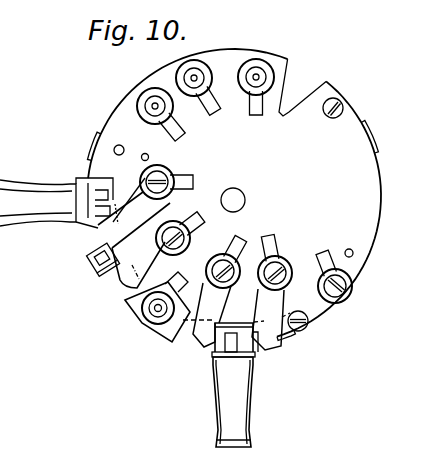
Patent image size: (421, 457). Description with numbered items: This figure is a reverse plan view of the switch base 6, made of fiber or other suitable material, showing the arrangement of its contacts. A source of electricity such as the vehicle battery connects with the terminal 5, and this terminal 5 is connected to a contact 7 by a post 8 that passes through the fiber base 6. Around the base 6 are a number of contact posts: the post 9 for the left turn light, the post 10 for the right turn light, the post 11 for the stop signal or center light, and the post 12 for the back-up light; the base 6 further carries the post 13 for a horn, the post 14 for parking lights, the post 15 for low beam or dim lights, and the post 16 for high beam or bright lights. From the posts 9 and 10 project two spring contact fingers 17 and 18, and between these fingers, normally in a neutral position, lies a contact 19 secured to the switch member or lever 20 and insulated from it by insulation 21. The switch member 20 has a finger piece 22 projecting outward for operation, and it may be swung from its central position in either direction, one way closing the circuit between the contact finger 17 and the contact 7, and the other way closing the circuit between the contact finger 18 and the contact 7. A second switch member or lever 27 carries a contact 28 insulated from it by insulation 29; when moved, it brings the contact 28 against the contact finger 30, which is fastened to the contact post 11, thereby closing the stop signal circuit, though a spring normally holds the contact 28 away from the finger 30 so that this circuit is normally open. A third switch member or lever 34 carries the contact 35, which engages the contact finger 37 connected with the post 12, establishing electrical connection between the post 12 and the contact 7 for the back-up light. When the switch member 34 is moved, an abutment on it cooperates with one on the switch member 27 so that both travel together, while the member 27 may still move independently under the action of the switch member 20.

The terminal 5 is at (140, 290).
The switch base 6 is at (344, 203).
The contact 7 is at (192, 330).
The post 8 is at (146, 325).
The contact post 9 is at (278, 256).
The contact post 10 is at (218, 257).
The contact post 11 is at (180, 224).
The contact post 12 is at (166, 176).
The contact post 13 is at (338, 303).
The contact post 14 is at (260, 78).
The contact post 15 is at (197, 74).
The contact post 16 is at (150, 104).
The spring contact finger 17 is at (268, 347).
The spring contact finger 18 is at (197, 347).
The contact 19 is at (230, 332).
The switch member 20 is at (218, 358).
The insulation 21 is at (249, 357).
The finger piece 22 is at (228, 428).
The switch member 27 is at (92, 250).
The contact 28 is at (94, 267).
The insulation 29 is at (103, 281).
The contact finger 30 is at (152, 258).
The switch member 34 is at (78, 203).
The contact 35 is at (88, 185).
The contact finger 37 is at (100, 228).